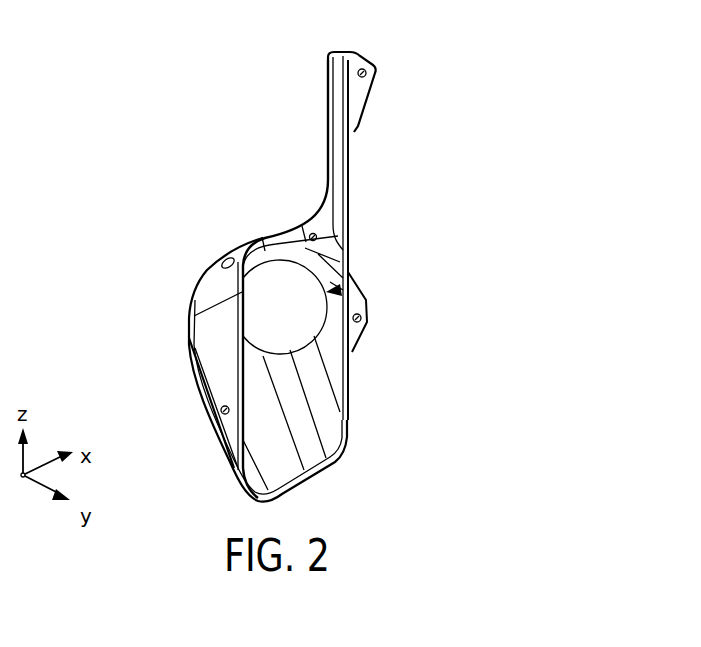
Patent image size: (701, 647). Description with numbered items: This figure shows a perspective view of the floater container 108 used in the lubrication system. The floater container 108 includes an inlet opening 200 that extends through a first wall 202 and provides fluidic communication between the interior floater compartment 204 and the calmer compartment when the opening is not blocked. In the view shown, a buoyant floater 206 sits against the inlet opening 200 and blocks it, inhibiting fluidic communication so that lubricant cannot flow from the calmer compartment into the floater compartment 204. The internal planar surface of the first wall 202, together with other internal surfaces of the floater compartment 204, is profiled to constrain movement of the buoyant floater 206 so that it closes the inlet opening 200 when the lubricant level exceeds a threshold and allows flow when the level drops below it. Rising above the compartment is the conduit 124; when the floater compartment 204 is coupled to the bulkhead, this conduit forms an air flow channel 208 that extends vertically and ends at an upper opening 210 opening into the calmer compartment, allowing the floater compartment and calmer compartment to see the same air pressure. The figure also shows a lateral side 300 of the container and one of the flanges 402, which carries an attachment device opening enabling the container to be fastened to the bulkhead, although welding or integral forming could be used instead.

The floater container 108 is at (118, 158).
The conduit 124 is at (296, 128).
The inlet opening 200 is at (222, 270).
The first wall 202 is at (212, 283).
The interior floater compartment 204 is at (340, 286).
The buoyant floater 206 is at (300, 328).
The air flow channel 208 is at (336, 184).
The upper opening 210 is at (354, 48).
The lateral side 300 is at (222, 340).
The flange 402 is at (228, 428).